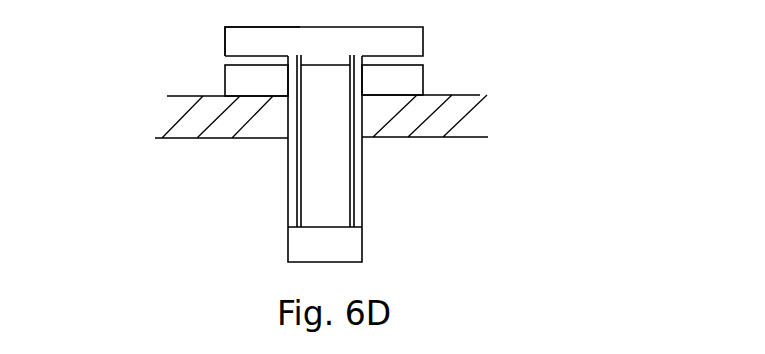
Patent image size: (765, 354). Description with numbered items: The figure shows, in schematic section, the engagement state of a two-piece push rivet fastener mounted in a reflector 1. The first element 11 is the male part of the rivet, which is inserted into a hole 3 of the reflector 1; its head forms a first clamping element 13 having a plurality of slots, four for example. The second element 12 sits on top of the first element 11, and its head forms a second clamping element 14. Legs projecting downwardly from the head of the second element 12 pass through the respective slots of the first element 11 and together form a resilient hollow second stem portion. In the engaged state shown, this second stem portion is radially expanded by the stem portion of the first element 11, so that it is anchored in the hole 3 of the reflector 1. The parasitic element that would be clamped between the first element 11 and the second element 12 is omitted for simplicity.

The reflector 1 is at (465, 127).
The hole 3 is at (287, 116).
The first element 11 is at (413, 82).
The second element 12 is at (413, 39).
The first clamping element 13 is at (235, 82).
The second clamping element 14 is at (247, 43).